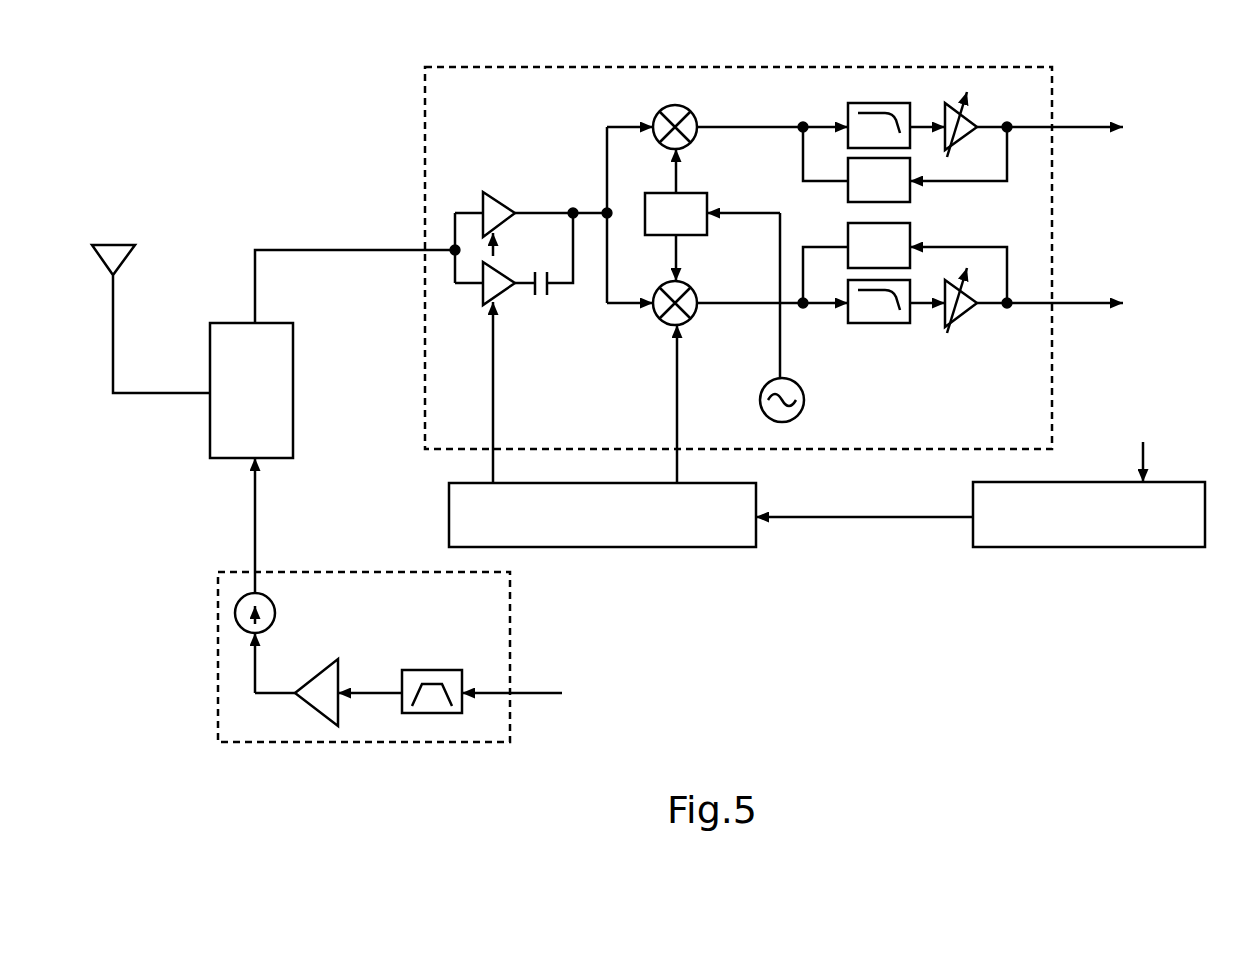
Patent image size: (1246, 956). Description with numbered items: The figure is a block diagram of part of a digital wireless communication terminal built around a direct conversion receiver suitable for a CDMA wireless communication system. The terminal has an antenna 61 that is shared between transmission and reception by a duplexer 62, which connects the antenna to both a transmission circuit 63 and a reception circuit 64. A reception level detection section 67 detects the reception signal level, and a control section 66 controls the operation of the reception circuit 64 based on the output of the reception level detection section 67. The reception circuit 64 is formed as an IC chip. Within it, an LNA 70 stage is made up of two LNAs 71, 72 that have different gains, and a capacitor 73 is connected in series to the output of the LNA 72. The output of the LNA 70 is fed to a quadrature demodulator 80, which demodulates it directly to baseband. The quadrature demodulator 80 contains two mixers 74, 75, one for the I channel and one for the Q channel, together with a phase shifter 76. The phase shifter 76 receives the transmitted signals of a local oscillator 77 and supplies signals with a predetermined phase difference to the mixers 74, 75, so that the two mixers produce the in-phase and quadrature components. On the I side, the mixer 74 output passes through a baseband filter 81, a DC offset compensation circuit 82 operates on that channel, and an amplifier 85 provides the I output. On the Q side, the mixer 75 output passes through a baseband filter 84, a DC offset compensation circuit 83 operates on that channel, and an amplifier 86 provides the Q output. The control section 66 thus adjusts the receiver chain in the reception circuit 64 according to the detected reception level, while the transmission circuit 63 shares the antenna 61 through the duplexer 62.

The antenna 61 is at (137, 247).
The duplexer 62 is at (293, 350).
The transmission circuit 63 is at (388, 571).
The reception circuit 64 is at (857, 66).
The control section 66 is at (722, 547).
The reception level detection section 67 is at (1147, 547).
The LNA 70 is at (526, 310).
The LNA 71 is at (483, 196).
The LNA 72 is at (483, 300).
The capacitor 73 is at (547, 295).
The mixer 74 is at (693, 112).
The mixer 75 is at (693, 288).
The phase shifter 76 is at (700, 193).
The local oscillator 77 is at (765, 386).
The quadrature demodulator 80 is at (689, 242).
The baseband filter 81 is at (848, 110).
The DC offset compensation circuit 82 is at (910, 200).
The DC offset compensation circuit 83 is at (848, 228).
The baseband filter 84 is at (848, 322).
The amplifier 85 is at (965, 140).
The amplifier 86 is at (965, 318).